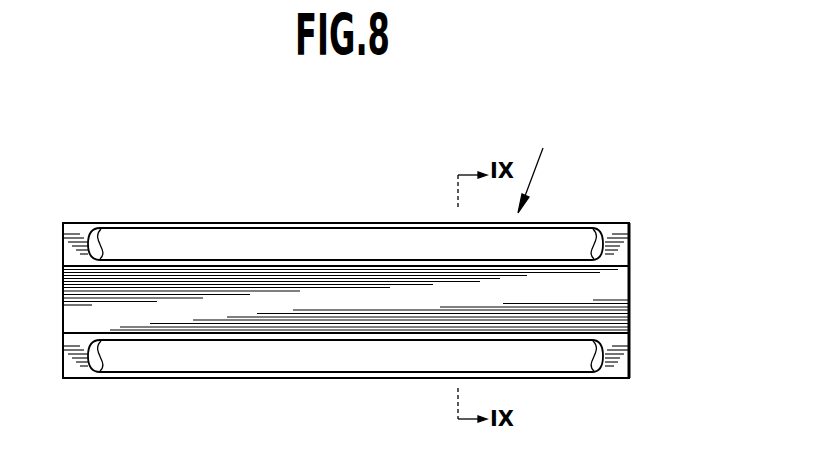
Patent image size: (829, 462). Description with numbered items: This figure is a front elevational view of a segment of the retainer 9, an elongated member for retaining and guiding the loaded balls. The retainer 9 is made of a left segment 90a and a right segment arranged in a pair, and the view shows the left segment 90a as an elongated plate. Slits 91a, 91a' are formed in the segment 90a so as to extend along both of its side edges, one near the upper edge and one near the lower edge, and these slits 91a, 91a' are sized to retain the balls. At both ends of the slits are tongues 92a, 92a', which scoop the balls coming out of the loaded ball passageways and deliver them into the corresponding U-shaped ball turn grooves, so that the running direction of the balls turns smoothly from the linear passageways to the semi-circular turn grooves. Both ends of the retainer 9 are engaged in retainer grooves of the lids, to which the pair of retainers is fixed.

The left segment 90a is at (604, 236).
The slit 91a is at (345, 223).
The slit 91a' is at (345, 383).
The tongue 92a is at (423, 227).
The tongue 92a' is at (429, 384).
The retainer 9 is at (557, 148).